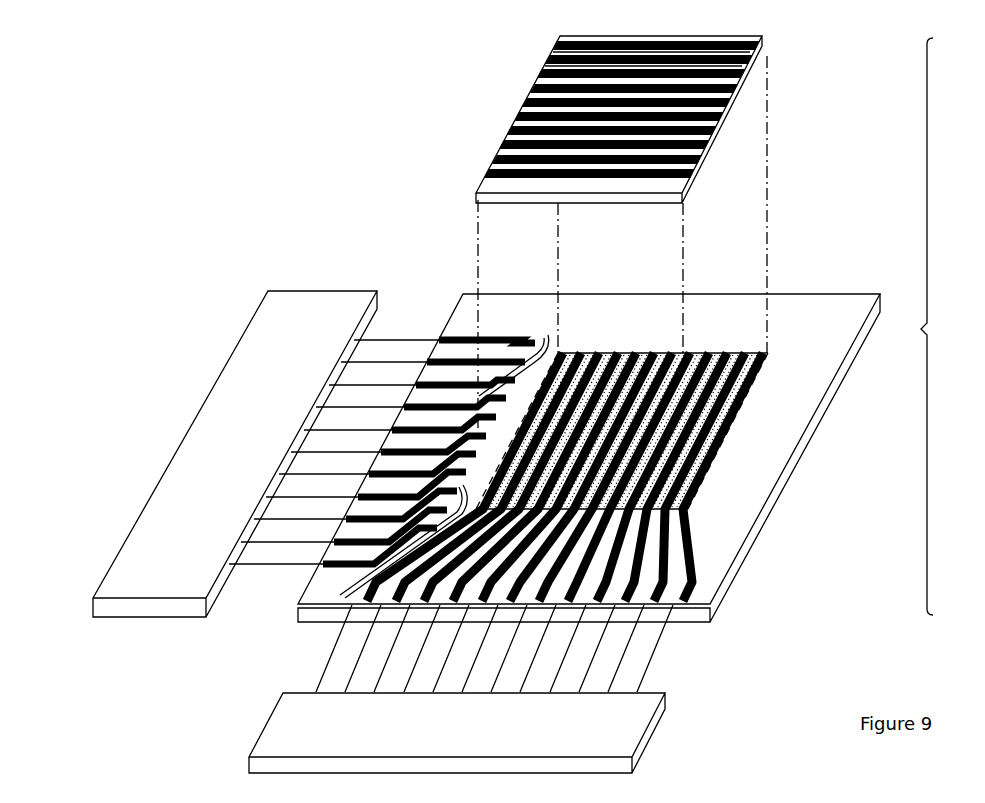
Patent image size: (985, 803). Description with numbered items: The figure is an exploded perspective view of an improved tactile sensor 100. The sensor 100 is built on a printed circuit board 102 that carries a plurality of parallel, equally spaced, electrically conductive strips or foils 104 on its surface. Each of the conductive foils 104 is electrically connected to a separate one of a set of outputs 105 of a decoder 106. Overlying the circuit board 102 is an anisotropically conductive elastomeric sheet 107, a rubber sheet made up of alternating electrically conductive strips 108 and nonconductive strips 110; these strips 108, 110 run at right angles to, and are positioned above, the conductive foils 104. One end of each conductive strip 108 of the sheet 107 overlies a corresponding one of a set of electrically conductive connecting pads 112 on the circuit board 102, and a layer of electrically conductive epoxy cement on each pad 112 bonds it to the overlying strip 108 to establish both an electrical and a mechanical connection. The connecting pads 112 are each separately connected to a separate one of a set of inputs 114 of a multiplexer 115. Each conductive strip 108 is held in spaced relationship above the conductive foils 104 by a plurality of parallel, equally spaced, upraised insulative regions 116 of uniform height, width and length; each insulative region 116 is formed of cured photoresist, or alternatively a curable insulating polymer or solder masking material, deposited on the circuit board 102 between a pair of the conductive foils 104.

The tactile sensor 100 is at (945, 326).
The printed circuit board 102 is at (768, 509).
The electrically conductive foils 104 is at (637, 353).
The outputs of the decoder 105 is at (647, 677).
The decoder 106 is at (640, 716).
The anisotropically conductive elastomeric sheet 107 is at (640, 119).
The electrically conductive strips 108 is at (510, 125).
The nonconductive strips 110 is at (533, 80).
The electrically conductive connecting pads 112 is at (548, 335).
The inputs of the multiplexer 114 is at (417, 345).
The multiplexer 115 is at (223, 407).
The upraised insulative regions 116 is at (745, 350).